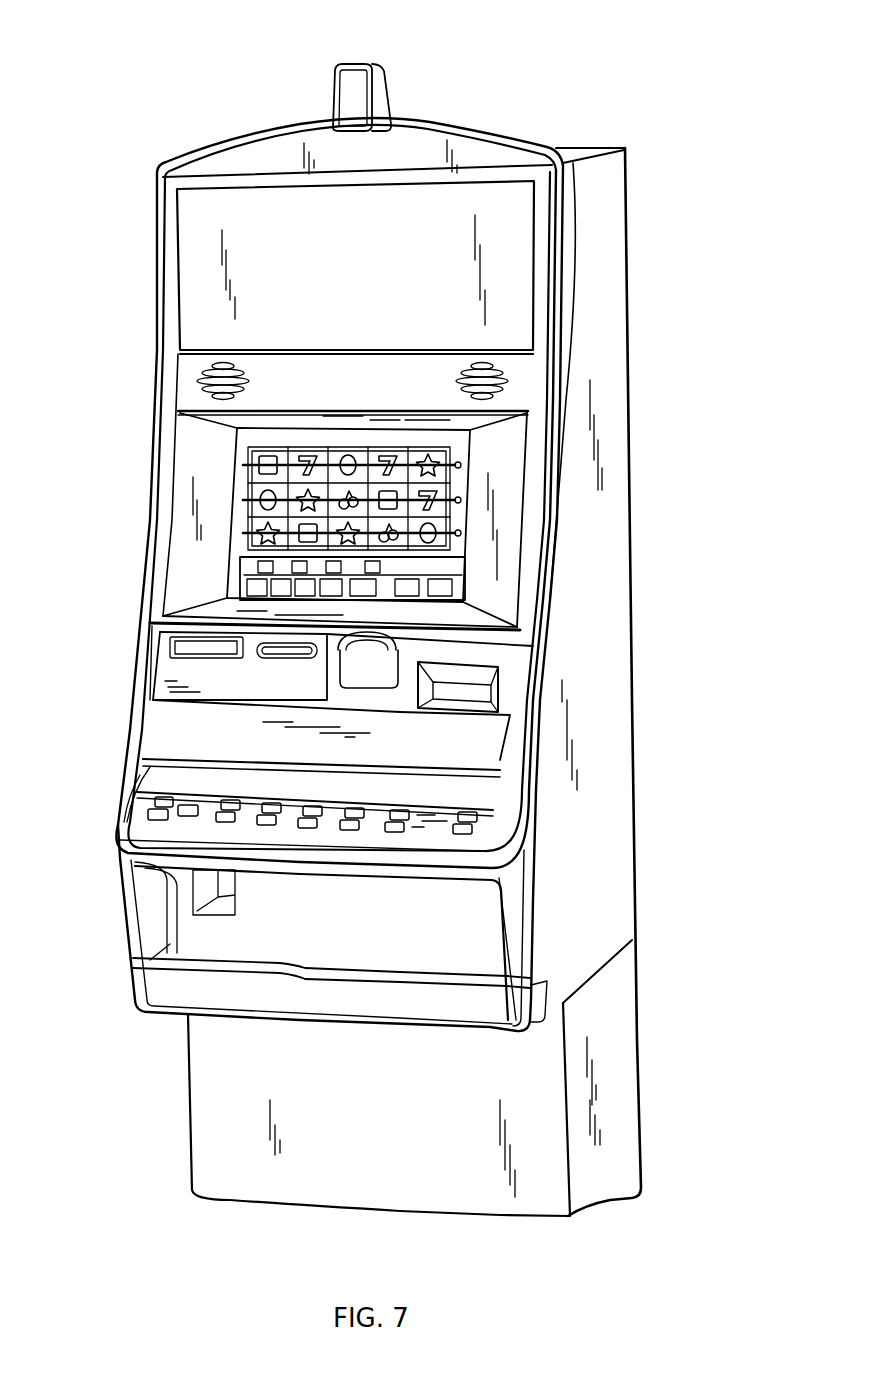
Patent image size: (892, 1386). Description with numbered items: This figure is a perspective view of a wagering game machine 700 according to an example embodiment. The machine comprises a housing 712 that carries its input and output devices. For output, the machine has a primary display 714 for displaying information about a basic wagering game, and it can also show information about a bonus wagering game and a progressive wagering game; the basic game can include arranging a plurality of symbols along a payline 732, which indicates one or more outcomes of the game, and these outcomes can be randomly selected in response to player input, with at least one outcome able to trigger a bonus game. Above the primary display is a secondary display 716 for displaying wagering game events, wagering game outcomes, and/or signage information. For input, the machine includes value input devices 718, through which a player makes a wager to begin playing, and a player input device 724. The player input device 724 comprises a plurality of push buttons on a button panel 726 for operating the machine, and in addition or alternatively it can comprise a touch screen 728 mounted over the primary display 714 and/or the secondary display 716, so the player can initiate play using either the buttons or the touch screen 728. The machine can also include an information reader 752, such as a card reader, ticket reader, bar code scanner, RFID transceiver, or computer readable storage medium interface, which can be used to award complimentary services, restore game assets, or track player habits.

The wagering game machine 700 is at (128, 27).
The housing 712 is at (613, 226).
The secondary display 716 is at (230, 262).
The primary display 714 is at (232, 520).
The payline 732 is at (347, 447).
The touch screen 728 is at (467, 590).
The information reader 752 is at (257, 652).
The value input device 718 is at (400, 650).
The player input device 724 is at (490, 813).
The button panel 726 is at (213, 815).